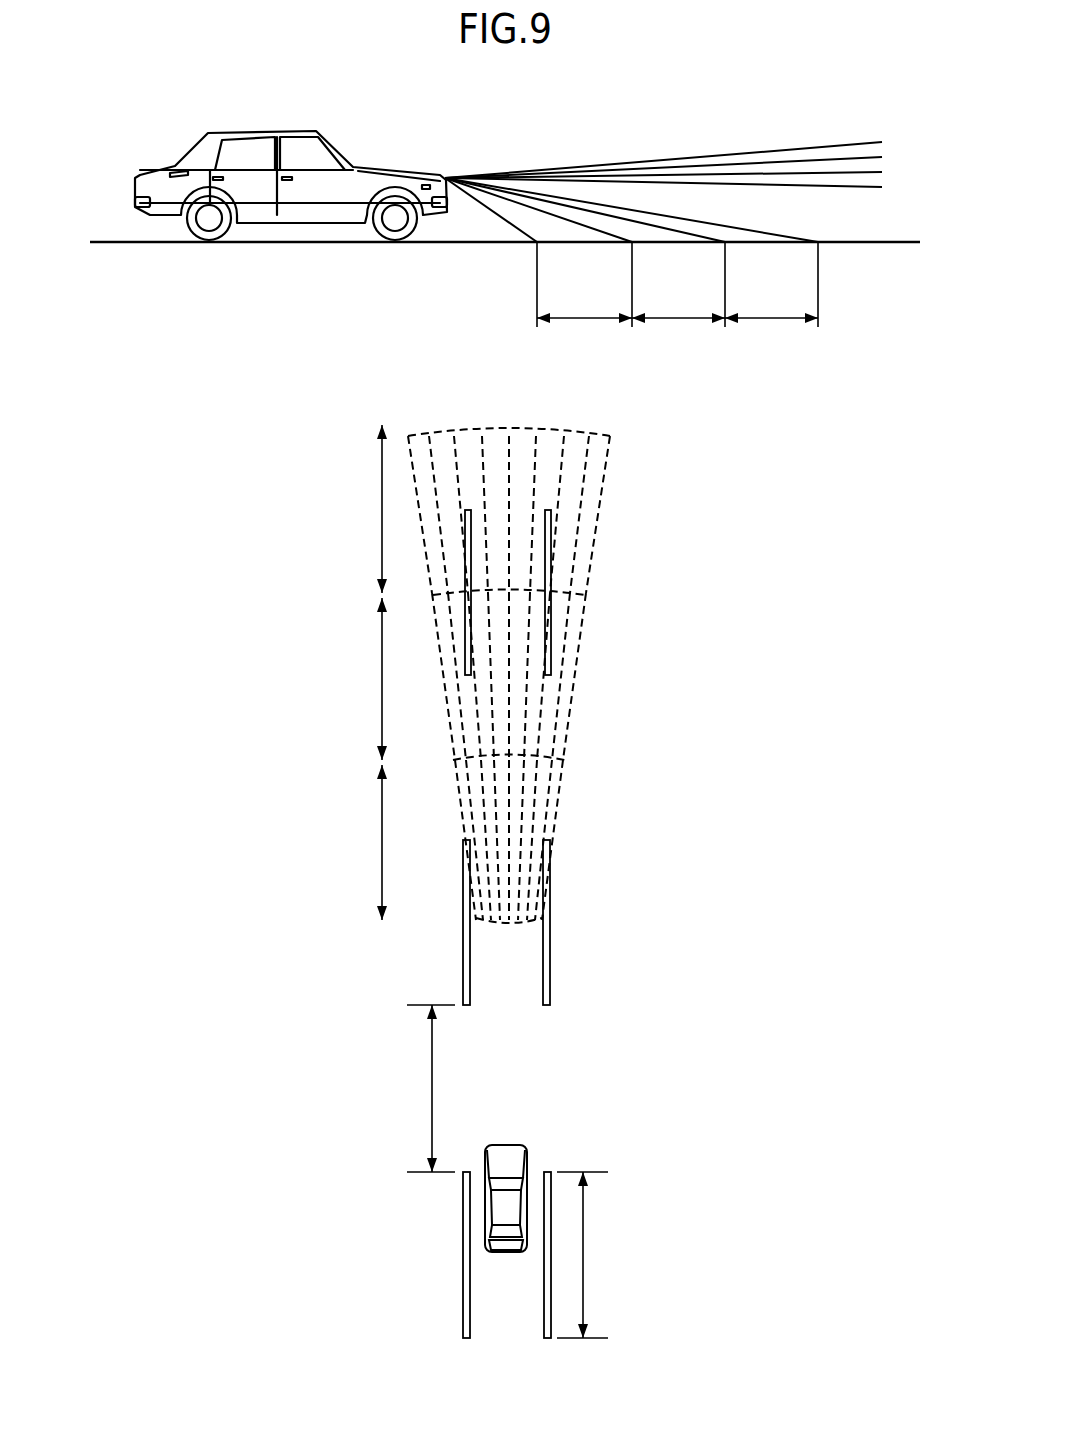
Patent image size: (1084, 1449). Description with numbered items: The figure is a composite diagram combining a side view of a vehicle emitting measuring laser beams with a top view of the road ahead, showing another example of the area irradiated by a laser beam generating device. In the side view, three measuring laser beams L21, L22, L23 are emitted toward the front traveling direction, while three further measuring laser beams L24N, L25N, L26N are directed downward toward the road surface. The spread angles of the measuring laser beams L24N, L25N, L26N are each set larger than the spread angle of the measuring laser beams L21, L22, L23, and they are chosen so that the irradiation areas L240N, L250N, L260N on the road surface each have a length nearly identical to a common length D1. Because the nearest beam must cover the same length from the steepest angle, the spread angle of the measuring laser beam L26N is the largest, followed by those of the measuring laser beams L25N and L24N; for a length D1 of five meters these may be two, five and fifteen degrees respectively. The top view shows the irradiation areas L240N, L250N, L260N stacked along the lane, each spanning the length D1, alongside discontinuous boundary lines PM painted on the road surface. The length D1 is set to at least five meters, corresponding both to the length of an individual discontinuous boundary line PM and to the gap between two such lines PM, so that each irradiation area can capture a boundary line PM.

The measuring laser beam L21 is at (722, 160).
The measuring laser beam L22 is at (769, 168).
The measuring laser beam L23 is at (819, 180).
The measuring laser beam L24N is at (750, 233).
The measuring laser beam L25N is at (650, 235).
The measuring laser beam L26N is at (530, 226).
The irradiation area L240N is at (597, 509).
The irradiation area L250N is at (580, 673).
The irradiation area L260N is at (560, 832).
The discontinuous boundary line PM is at (547, 1007).
The common length D1 is at (581, 790).